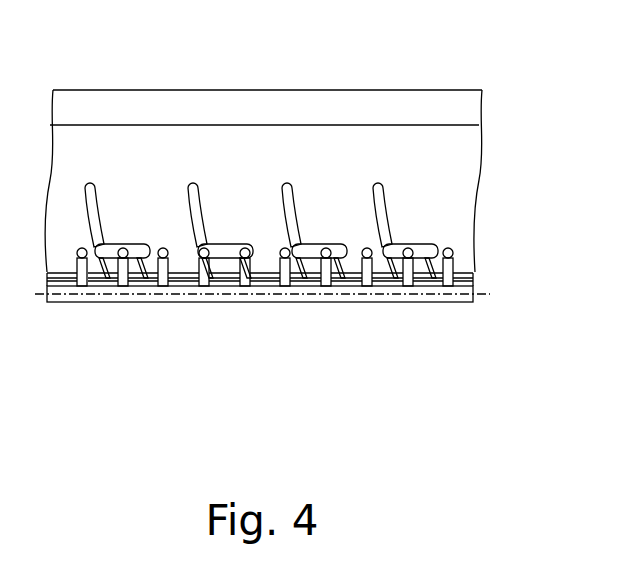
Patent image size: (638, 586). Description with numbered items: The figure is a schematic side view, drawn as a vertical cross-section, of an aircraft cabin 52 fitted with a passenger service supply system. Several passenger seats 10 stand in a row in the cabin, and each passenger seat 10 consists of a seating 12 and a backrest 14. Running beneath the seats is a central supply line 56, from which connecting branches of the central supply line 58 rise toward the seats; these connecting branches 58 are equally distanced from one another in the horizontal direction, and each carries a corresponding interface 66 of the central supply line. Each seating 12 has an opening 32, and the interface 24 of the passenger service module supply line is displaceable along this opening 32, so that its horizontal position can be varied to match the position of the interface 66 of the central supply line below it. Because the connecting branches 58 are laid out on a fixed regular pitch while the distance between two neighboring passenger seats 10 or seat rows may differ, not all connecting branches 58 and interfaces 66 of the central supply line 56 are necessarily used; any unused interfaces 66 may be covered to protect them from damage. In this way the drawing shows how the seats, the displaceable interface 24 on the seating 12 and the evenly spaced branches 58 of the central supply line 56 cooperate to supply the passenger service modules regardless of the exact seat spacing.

The passenger seat 10 is at (108, 213).
The seating 12 is at (265, 150).
The backrest 14 is at (191, 173).
The interface of the passenger service module supply line 24 is at (247, 229).
The opening of the seating 32 is at (233, 282).
The aircraft cabin 52 is at (433, 163).
The central supply line 56 is at (61, 296).
The connecting branch of the central supply line 58 is at (452, 260).
The interface of the central supply line 66 is at (368, 243).